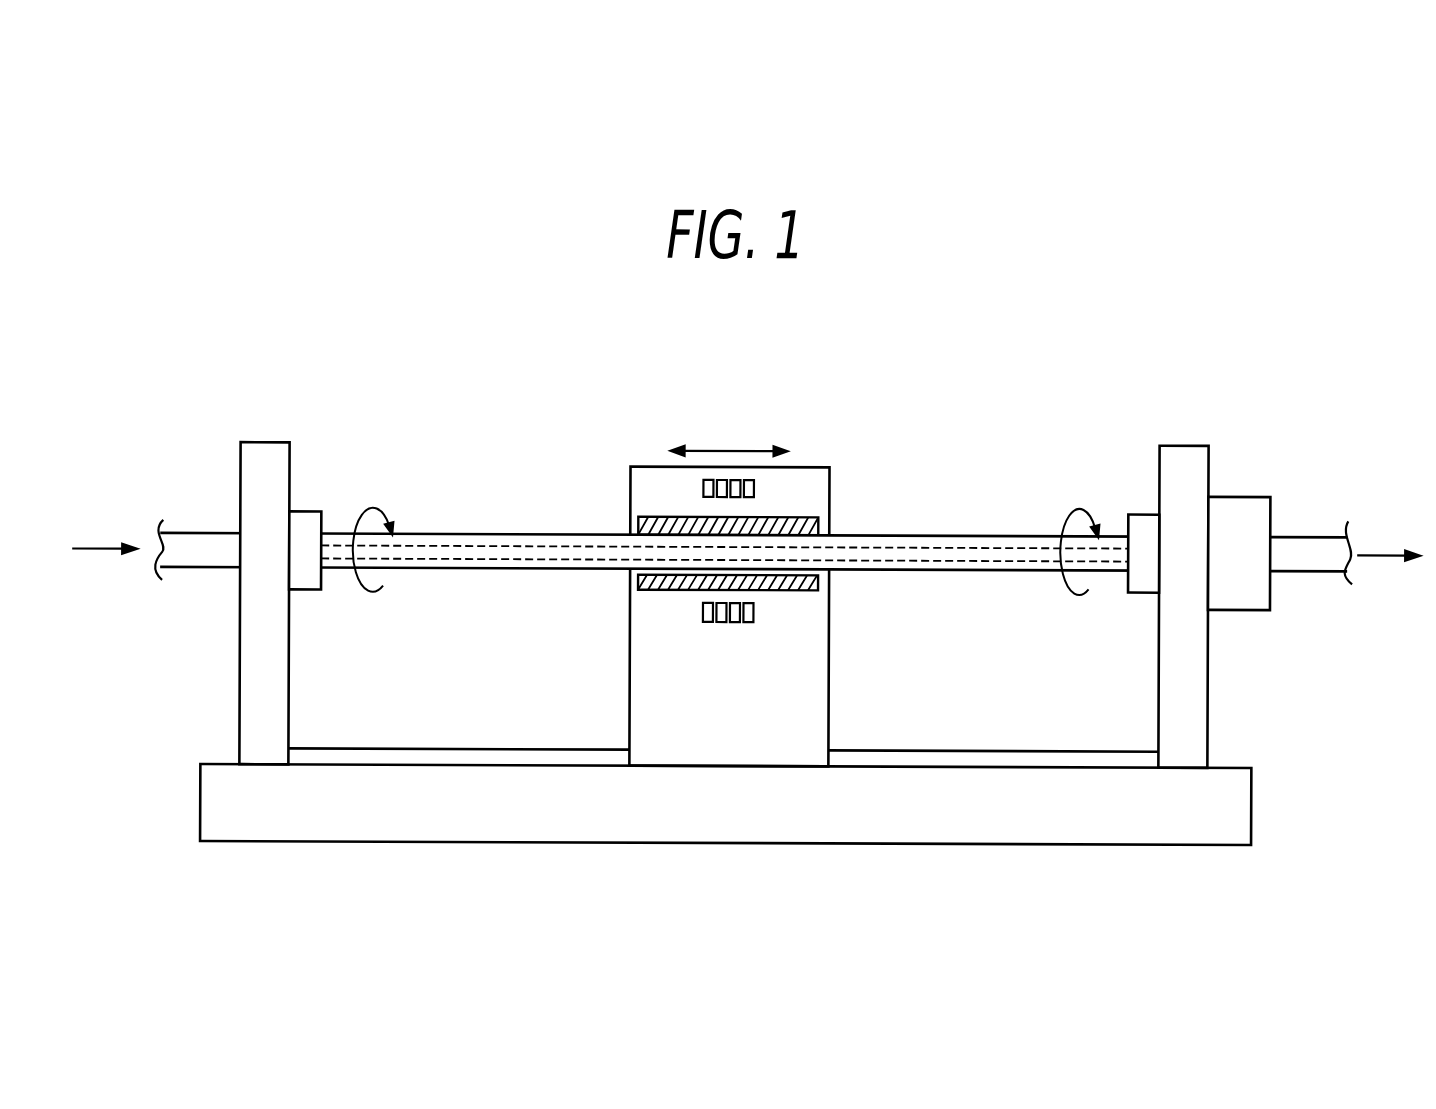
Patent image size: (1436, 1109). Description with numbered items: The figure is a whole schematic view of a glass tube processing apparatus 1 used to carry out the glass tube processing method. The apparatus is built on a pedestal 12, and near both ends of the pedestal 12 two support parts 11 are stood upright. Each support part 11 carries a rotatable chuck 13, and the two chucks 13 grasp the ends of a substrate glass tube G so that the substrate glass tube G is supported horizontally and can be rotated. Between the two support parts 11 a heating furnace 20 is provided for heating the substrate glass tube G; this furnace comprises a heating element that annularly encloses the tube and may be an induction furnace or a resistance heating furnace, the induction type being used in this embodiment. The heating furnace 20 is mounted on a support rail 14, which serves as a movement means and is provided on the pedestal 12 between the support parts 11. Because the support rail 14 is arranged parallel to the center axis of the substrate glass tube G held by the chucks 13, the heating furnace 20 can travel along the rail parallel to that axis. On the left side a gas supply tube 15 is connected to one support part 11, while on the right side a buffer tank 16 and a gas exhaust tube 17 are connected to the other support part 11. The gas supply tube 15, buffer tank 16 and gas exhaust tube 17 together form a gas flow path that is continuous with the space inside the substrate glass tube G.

The glass tube processing apparatus 1 is at (1045, 402).
The support parts 11 is at (265, 656).
The pedestal 12 is at (1190, 808).
The chucks 13 is at (305, 576).
The support rail 14 is at (918, 755).
The gas supply tube 15 is at (175, 545).
The buffer tank 16 is at (1240, 509).
The gas exhaust tube 17 is at (1303, 544).
The heating furnace 20 is at (806, 458).
The substrate glass tube G is at (505, 545).